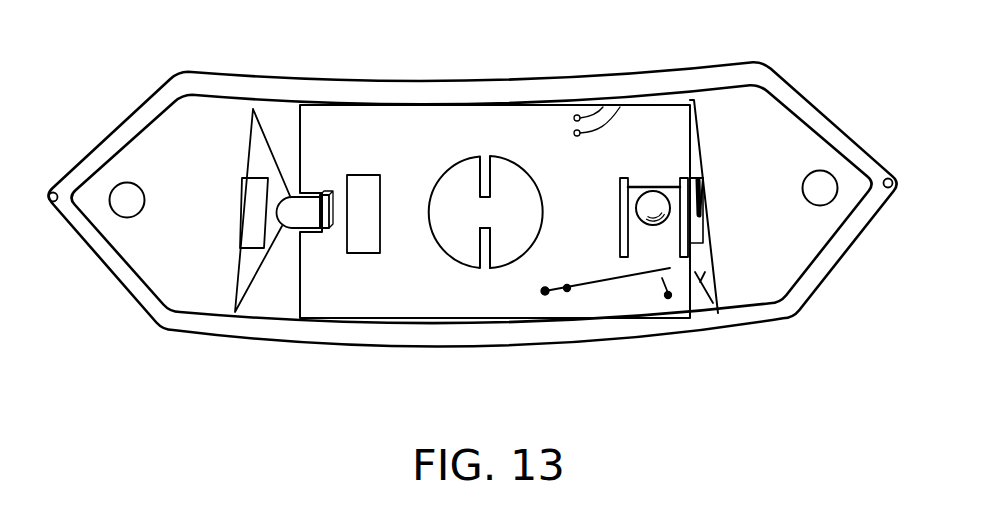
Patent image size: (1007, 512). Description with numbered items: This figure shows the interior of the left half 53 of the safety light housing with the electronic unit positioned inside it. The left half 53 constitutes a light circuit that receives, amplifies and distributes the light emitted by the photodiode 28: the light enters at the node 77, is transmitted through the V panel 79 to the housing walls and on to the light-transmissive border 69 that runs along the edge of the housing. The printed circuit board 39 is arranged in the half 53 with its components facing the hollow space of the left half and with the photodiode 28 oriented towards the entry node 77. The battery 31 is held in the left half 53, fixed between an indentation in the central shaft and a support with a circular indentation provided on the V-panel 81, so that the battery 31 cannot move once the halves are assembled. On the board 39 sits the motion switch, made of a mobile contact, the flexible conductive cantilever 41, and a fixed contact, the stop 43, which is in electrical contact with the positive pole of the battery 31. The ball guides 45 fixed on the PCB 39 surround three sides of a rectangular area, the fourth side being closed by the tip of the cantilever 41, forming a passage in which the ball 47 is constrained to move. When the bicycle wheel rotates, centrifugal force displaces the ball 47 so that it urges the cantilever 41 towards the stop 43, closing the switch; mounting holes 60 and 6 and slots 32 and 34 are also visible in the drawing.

The mounting hole 6 is at (822, 190).
The photodiode 28 is at (308, 217).
The battery 31 is at (700, 208).
The lower slot 32 is at (485, 252).
The upper slot 34 is at (483, 180).
The printed circuit board 39 is at (387, 293).
The cantilever 41 is at (608, 282).
The stop 43 is at (655, 282).
The ball guides 45 is at (618, 187).
The ball 47 is at (705, 192).
The left half 53 is at (648, 395).
The mounting hole 60 is at (118, 208).
The border 69 is at (130, 120).
The node 77 is at (253, 200).
The V panel 79 is at (247, 270).
The V-panel 81 is at (697, 293).